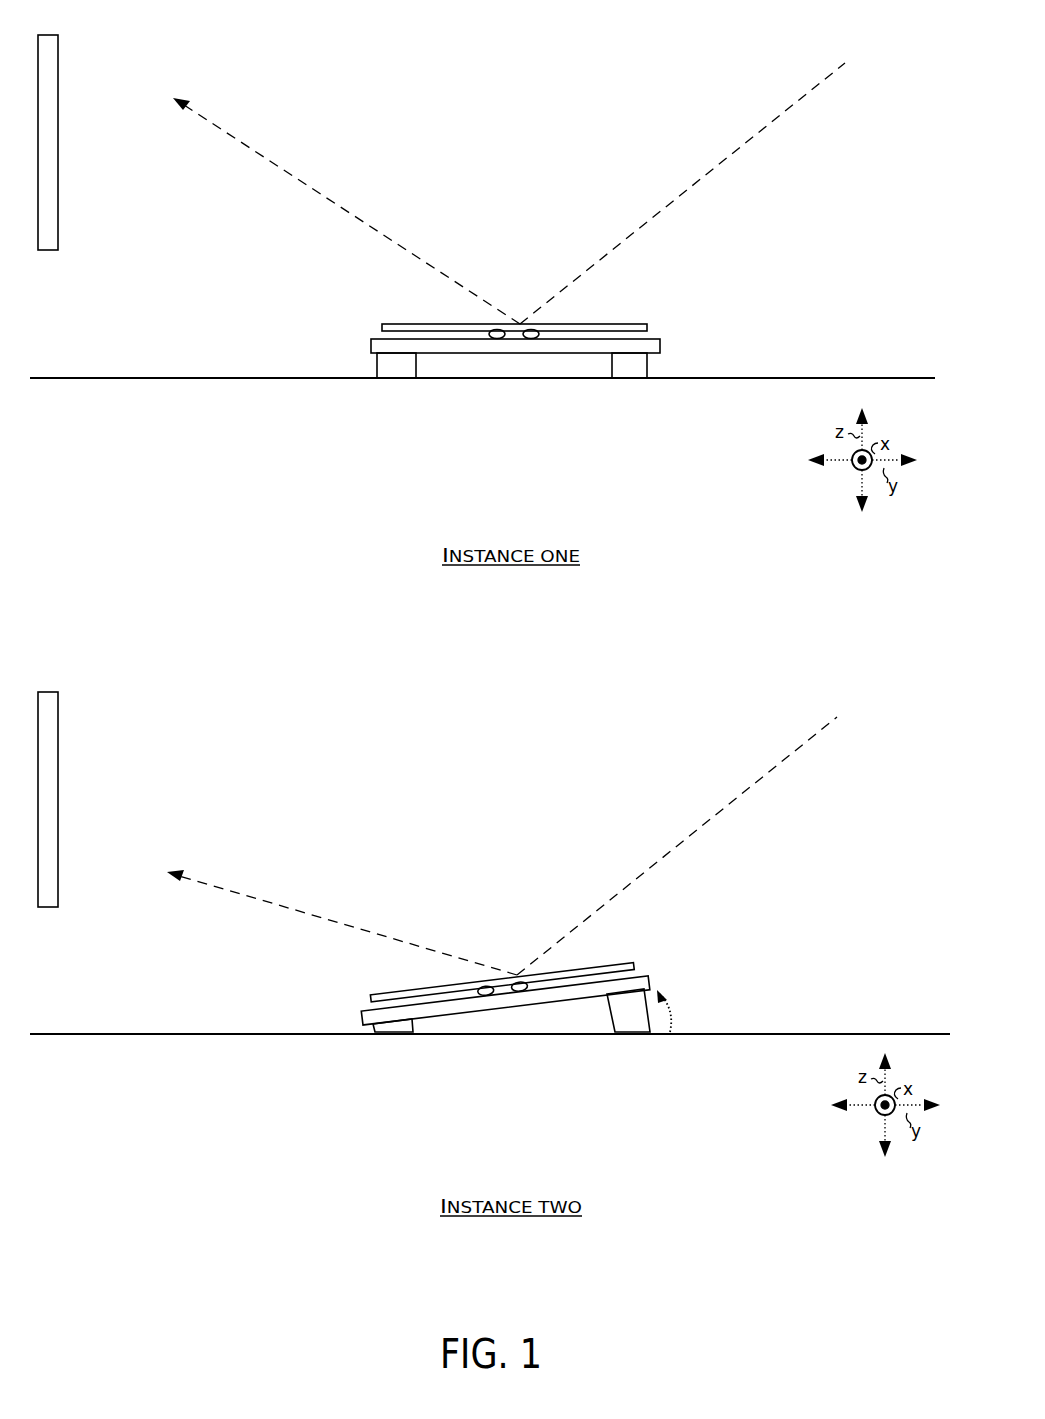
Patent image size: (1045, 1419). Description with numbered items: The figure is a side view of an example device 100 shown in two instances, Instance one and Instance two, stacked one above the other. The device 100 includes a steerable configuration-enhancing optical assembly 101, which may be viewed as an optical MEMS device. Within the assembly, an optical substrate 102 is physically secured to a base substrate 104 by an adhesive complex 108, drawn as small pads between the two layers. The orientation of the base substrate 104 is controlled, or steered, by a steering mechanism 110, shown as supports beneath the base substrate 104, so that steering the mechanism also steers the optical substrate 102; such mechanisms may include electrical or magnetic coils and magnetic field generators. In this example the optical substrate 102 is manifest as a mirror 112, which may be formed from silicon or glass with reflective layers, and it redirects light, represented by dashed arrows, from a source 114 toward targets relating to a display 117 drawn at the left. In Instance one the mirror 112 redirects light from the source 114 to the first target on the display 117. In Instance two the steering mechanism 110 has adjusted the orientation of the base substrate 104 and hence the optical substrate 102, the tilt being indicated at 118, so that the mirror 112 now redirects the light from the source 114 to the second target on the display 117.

The device 100 is at (548, 23).
The steerable configuration-enhancing optical assembly 101 is at (507, 674).
The optical substrate 102 is at (379, 322).
The base substrate 104 is at (367, 343).
The adhesive complex 108 is at (502, 1050).
The steering mechanism 110 is at (373, 366).
The mirror 112 is at (640, 324).
The source 114 is at (898, 728).
The display 117 is at (57, 35).
The adjusted orientation 118 is at (668, 1016).